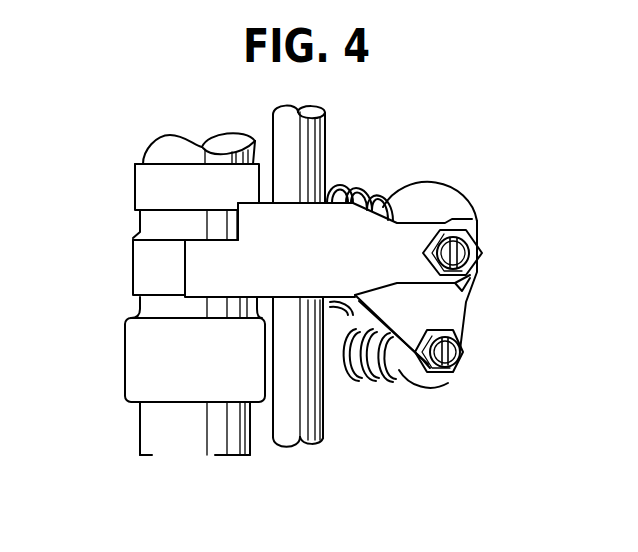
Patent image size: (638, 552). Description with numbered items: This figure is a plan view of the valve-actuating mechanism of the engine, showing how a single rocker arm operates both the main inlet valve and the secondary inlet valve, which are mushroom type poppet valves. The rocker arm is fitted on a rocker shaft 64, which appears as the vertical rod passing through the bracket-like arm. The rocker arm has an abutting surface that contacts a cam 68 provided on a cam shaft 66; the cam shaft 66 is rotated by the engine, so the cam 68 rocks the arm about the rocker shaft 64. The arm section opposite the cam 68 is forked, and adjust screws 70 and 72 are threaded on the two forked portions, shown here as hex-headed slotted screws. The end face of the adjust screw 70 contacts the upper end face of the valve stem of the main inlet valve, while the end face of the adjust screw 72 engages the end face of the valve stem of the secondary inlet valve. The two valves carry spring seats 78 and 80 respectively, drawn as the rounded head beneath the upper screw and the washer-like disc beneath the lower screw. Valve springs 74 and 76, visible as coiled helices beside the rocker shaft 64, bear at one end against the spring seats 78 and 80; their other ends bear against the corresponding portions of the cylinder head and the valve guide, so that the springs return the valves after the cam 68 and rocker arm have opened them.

The rocker shaft 64 is at (318, 135).
The cam shaft 66 is at (160, 157).
The cam 68 is at (133, 270).
The adjust screw 70 is at (466, 250).
The adjust screw 72 is at (453, 355).
The valve spring 74 is at (388, 188).
The valve spring 76 is at (390, 384).
The spring seat 78 is at (468, 200).
The spring seat 80 is at (432, 377).